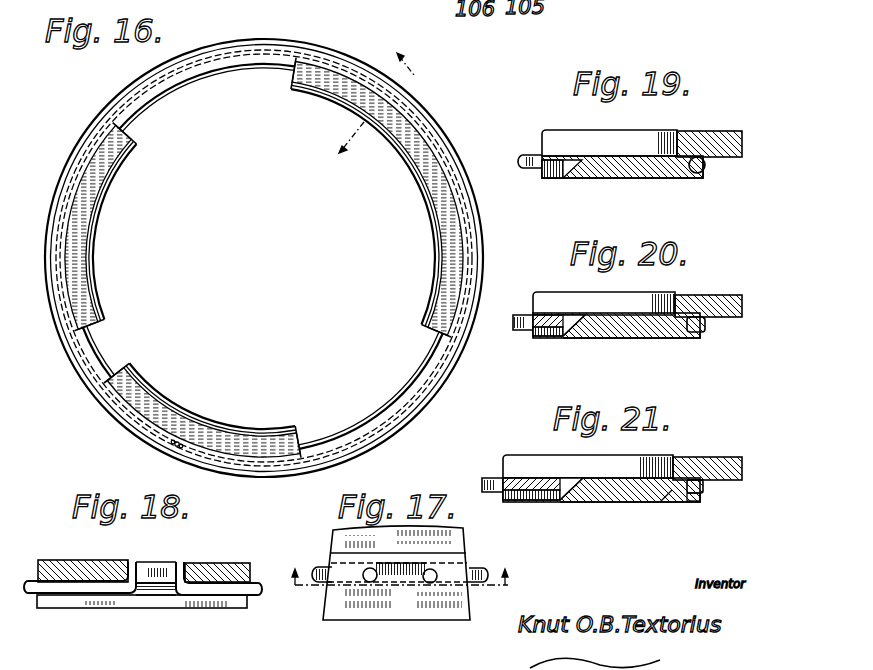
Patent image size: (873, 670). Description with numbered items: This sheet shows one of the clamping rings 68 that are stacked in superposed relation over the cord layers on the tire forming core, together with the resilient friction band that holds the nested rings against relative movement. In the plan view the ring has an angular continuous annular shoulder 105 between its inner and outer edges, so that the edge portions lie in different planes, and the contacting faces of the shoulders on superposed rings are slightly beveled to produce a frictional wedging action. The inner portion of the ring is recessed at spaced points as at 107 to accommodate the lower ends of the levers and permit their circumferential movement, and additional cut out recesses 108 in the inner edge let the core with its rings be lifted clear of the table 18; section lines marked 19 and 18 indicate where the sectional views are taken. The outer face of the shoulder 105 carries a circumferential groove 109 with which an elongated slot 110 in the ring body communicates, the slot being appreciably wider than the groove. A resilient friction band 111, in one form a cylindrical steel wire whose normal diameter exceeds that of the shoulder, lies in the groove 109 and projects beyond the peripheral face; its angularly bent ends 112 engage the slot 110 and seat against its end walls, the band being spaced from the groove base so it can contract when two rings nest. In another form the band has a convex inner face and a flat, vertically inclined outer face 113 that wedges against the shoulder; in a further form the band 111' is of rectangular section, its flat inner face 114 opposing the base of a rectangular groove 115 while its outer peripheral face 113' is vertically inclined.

In FIG. 17, the table 18 is at (406, 565).
In FIG. 16, the section line 19 is at (389, 117).
In FIG. 16, the clamping ring 68 is at (87, 205).
In FIG. 17, the clamping ring 68 is at (355, 615).
In FIG. 18, the clamping ring 68 is at (232, 605).
In FIG. 19, the clamping ring 68 is at (612, 130).
In FIG. 20, the clamping ring 68 is at (585, 295).
In FIG. 21, the clamping ring 68 is at (545, 446).
In FIG. 16, the annular shoulder 105 is at (109, 146).
In FIG. 17, the annular shoulder 105 is at (440, 553).
In FIG. 19, the annular shoulder 105 is at (700, 178).
In FIG. 20, the annular shoulder 105 is at (703, 333).
In FIG. 21, the annular shoulder 105 is at (705, 502).
In FIG. 16, the recesses 107 is at (294, 67).
In FIG. 16, the cut out recesses 108 is at (85, 330).
In FIG. 16, the circumferential groove 109 is at (412, 400).
In FIG. 17, the circumferential groove 109 is at (473, 590).
In FIG. 18, the circumferential groove 109 is at (163, 597).
In FIG. 19, the circumferential groove 109 is at (675, 178).
In FIG. 20, the circumferential groove 109 is at (685, 338).
In FIG. 16, the slot 110 is at (177, 443).
In FIG. 17, the slot 110 is at (400, 580).
In FIG. 18, the slot 110 is at (153, 566).
In FIG. 17, the resilient friction band 111 is at (386, 596).
In FIG. 18, the resilient friction band 111 is at (144, 601).
In FIG. 19, the resilient friction band 111 is at (735, 171).
In FIG. 21, the friction band 111' is at (736, 450).
In FIG. 16, the angularly bent ends 112 is at (173, 441).
In FIG. 17, the angularly bent ends 112 is at (370, 582).
In FIG. 18, the angularly bent ends 112 is at (133, 565).
In FIG. 20, the flat outer face 113 is at (735, 336).
In FIG. 21, the outer peripheral face 113' is at (742, 495).
In FIG. 21, the flat inner face 114 is at (693, 495).
In FIG. 21, the rectangular groove 115 is at (665, 500).